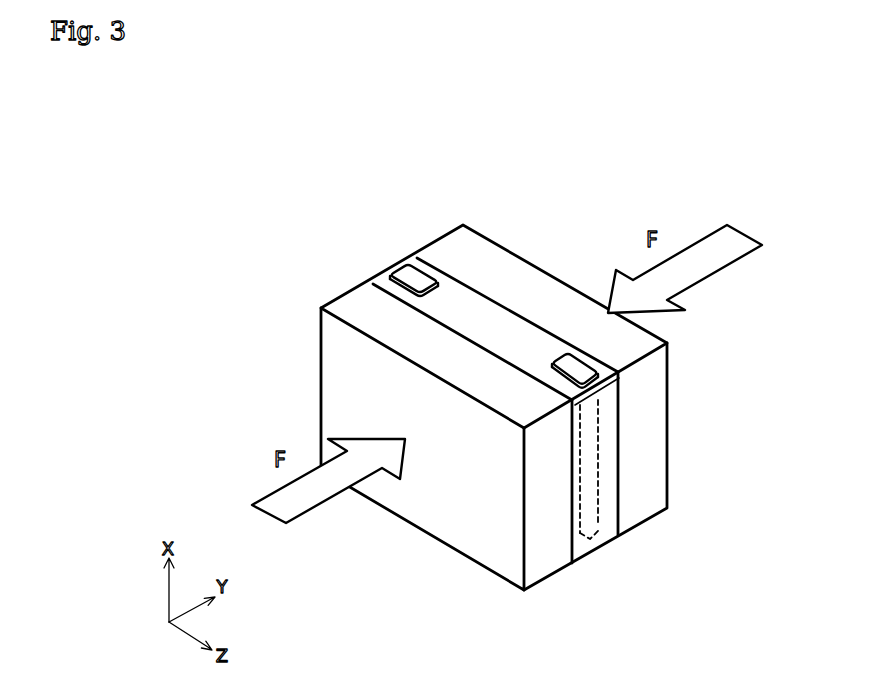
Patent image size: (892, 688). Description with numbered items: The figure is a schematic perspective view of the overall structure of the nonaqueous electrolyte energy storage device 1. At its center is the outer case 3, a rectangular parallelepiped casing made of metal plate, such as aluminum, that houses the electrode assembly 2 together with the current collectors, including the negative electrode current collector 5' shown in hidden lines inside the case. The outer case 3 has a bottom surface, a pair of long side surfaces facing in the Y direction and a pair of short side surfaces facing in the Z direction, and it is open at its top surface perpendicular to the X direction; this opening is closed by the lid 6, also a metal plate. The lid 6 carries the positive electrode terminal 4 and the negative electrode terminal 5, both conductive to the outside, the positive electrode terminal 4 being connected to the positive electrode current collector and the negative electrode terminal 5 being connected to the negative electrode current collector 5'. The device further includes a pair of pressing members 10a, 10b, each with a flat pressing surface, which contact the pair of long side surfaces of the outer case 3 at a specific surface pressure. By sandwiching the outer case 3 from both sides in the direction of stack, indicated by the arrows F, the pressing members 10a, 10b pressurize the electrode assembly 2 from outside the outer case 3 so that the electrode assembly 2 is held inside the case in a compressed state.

The nonaqueous electrolyte energy storage device 1 is at (692, 168).
The electrode assembly 2 is at (597, 523).
The outer case 3 is at (588, 557).
The positive electrode terminal 4 is at (407, 268).
The negative electrode terminal 5 is at (650, 446).
The negative electrode current collector 5' is at (634, 495).
The lid 6 is at (494, 312).
The pressing member 10a is at (553, 563).
The pressing member 10b is at (660, 372).